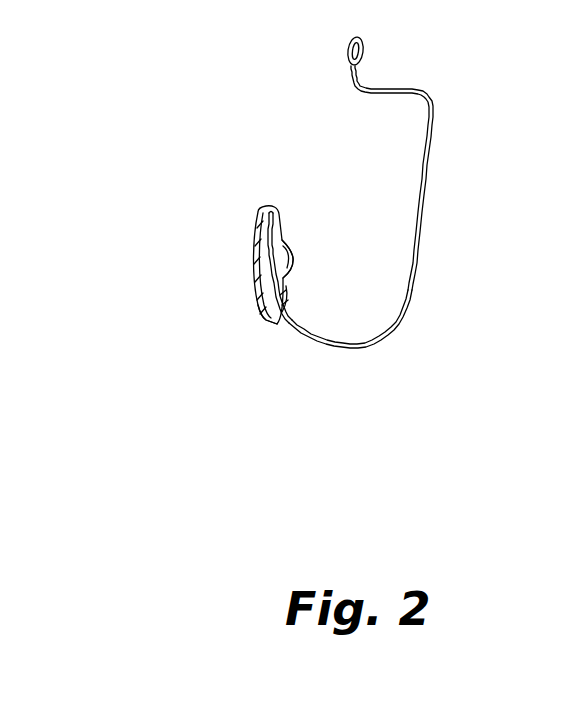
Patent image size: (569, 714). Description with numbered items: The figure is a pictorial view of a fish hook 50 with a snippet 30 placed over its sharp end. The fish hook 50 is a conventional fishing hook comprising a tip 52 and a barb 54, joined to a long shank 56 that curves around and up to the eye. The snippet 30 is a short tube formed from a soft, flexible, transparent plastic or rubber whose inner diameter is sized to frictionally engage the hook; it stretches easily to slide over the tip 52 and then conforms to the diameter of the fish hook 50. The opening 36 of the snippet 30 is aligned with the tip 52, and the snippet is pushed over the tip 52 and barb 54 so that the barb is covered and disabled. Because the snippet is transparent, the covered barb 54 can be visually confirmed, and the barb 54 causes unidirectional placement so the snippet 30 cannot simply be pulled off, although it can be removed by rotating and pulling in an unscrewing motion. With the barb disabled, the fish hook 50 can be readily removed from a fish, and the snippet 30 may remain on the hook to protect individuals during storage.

The snippet 30 is at (245, 277).
The opening of the snippet 36 is at (268, 322).
The fish hook 50 is at (438, 137).
The tip 52 is at (265, 237).
The barb 54 is at (282, 248).
The shank 56 is at (363, 342).